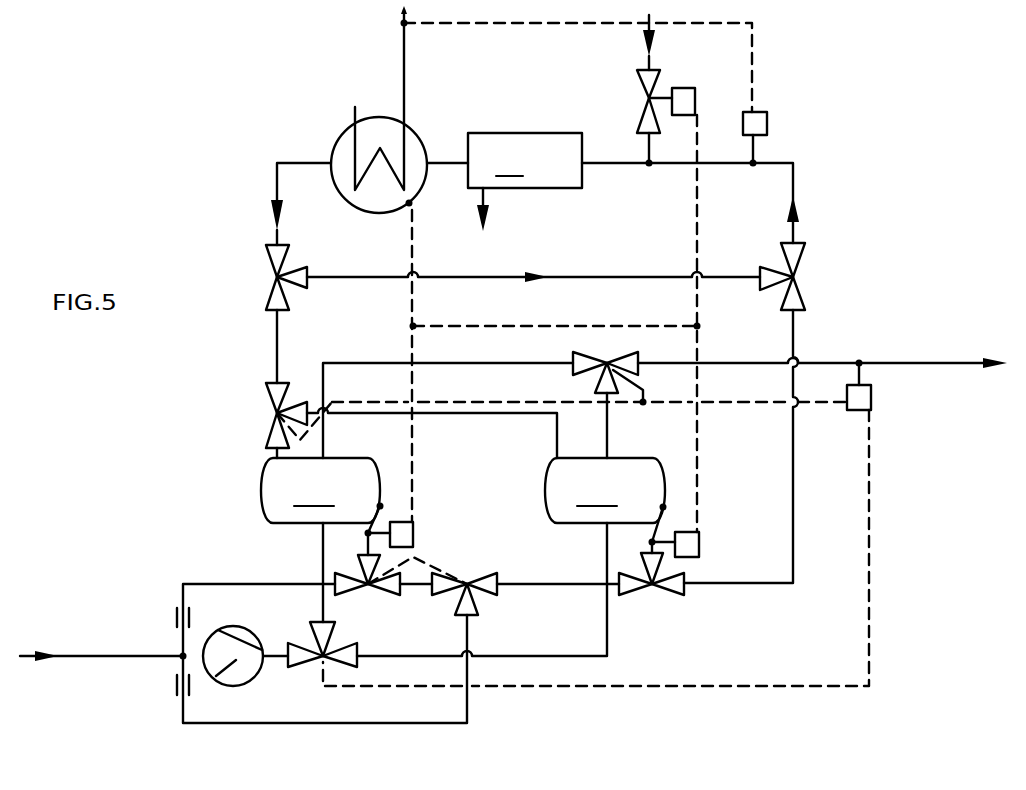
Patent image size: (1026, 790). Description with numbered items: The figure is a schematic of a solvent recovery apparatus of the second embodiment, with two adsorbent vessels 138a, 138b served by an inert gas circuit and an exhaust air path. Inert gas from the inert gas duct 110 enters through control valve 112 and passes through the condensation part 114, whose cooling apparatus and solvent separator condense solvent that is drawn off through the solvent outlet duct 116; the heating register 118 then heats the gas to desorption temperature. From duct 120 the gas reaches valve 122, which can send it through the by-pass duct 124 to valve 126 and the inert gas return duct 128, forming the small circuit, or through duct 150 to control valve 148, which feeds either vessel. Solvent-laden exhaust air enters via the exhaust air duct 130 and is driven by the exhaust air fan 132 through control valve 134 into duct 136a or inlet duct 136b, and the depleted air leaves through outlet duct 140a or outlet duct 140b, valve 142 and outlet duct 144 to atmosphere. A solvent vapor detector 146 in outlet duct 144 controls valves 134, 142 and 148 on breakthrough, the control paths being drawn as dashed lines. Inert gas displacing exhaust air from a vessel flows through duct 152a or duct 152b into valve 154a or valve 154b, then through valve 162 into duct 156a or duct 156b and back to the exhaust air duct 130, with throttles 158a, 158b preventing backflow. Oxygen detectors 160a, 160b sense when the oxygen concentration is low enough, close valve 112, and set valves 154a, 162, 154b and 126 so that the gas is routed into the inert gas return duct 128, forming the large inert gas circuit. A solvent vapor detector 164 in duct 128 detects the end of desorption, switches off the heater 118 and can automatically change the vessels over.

The inert gas duct 110 is at (652, 58).
The control valve 112 is at (648, 98).
The condensation part 114 is at (505, 160).
The solvent outlet duct 116 is at (483, 200).
The heating register 118 is at (407, 137).
The duct 120 is at (276, 180).
The valve 122 is at (266, 278).
The by-pass duct 124 is at (497, 274).
The valve 126 is at (803, 277).
The inert gas return duct 128 is at (793, 180).
The exhaust air duct 130 is at (112, 655).
The exhaust air fan 132 is at (240, 676).
The control valve 134 is at (322, 664).
The duct 136a is at (322, 548).
The inlet duct 136b is at (606, 533).
The adsorbent vessel 138a is at (320, 490).
The adsorbent vessel 138b is at (605, 490).
The outlet duct 140a is at (342, 362).
The outlet duct 140b is at (608, 432).
The valve 142 is at (606, 368).
The outlet duct 144 is at (896, 362).
The solvent vapor detector 146 is at (872, 398).
The control valve 148 is at (267, 413).
The duct 150 is at (277, 352).
The duct 152a is at (369, 531).
The duct 152b is at (655, 538).
The valve 154a is at (368, 590).
The valve 154b is at (652, 592).
The duct 156a is at (260, 584).
The duct 156b is at (467, 719).
The throttle 158a is at (177, 621).
The throttle 158b is at (177, 682).
The oxygen detector 160a is at (413, 534).
The oxygen detector 160b is at (700, 542).
The valve 162 is at (466, 575).
The solvent vapor detector 164 is at (768, 122).